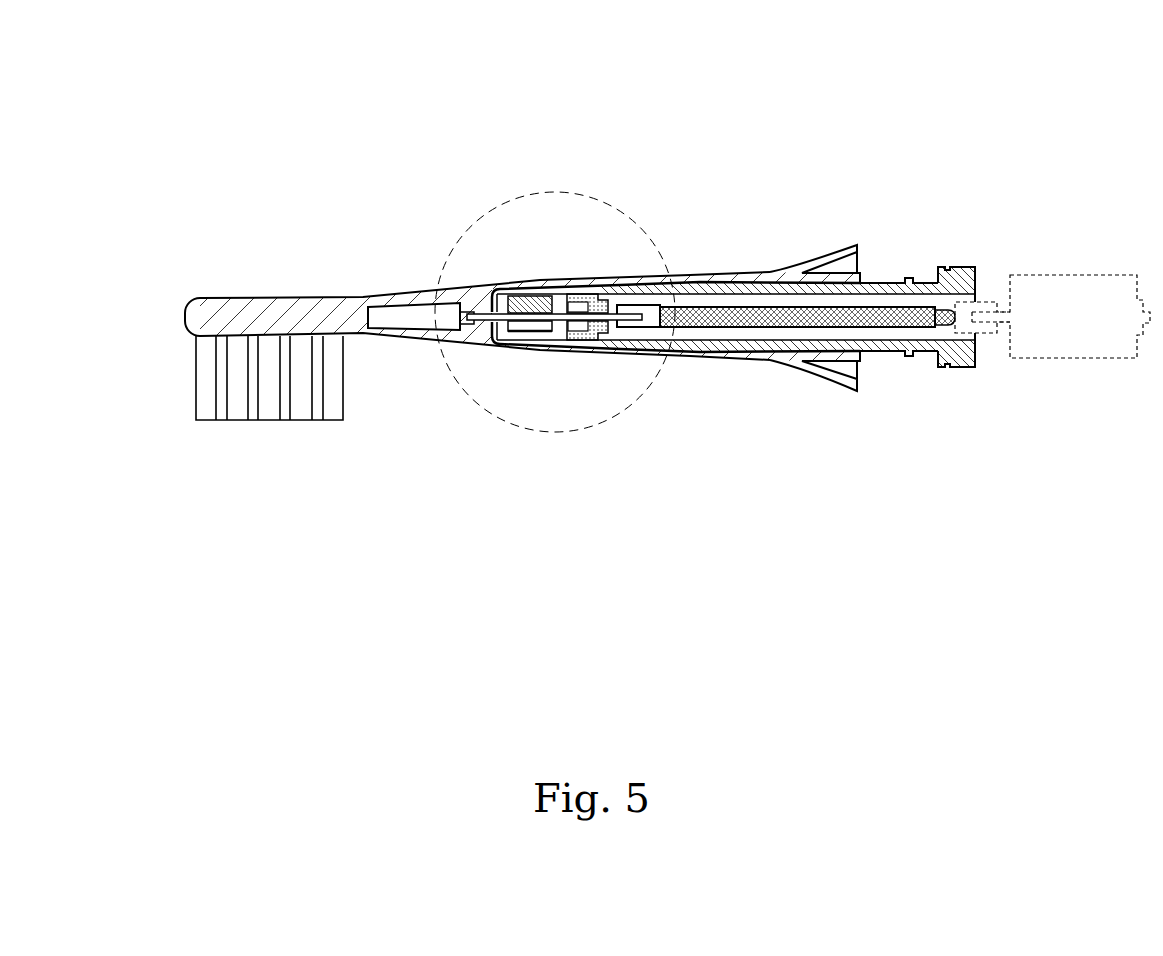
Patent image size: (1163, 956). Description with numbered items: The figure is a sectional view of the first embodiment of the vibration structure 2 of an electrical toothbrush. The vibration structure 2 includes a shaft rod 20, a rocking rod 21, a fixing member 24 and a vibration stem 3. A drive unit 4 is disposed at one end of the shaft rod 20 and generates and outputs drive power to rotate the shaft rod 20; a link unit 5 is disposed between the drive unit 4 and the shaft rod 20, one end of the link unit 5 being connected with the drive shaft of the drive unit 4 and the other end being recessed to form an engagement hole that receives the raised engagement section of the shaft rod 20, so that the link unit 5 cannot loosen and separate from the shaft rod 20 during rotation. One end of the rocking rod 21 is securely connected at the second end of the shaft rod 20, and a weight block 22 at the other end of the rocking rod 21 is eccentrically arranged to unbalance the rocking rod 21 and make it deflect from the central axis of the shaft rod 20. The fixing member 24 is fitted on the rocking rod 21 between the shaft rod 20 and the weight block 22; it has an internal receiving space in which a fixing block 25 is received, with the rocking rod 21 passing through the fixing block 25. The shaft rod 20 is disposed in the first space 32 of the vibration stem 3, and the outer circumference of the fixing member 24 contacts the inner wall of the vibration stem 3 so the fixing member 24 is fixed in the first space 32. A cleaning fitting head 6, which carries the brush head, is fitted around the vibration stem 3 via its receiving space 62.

The vibration structure 2 is at (364, 140).
The receiving space 62 is at (423, 290).
The cleaning fitting head 6 is at (760, 280).
The vibration stem 3 is at (893, 352).
The first space 32 is at (892, 285).
The link unit 5 is at (990, 295).
The weight block 22 is at (524, 295).
The fixing member 24 is at (582, 295).
The fixing block 25 is at (587, 335).
The shaft rod 20 is at (773, 330).
The rocking rod 21 is at (552, 330).
The drive unit 4 is at (1078, 338).